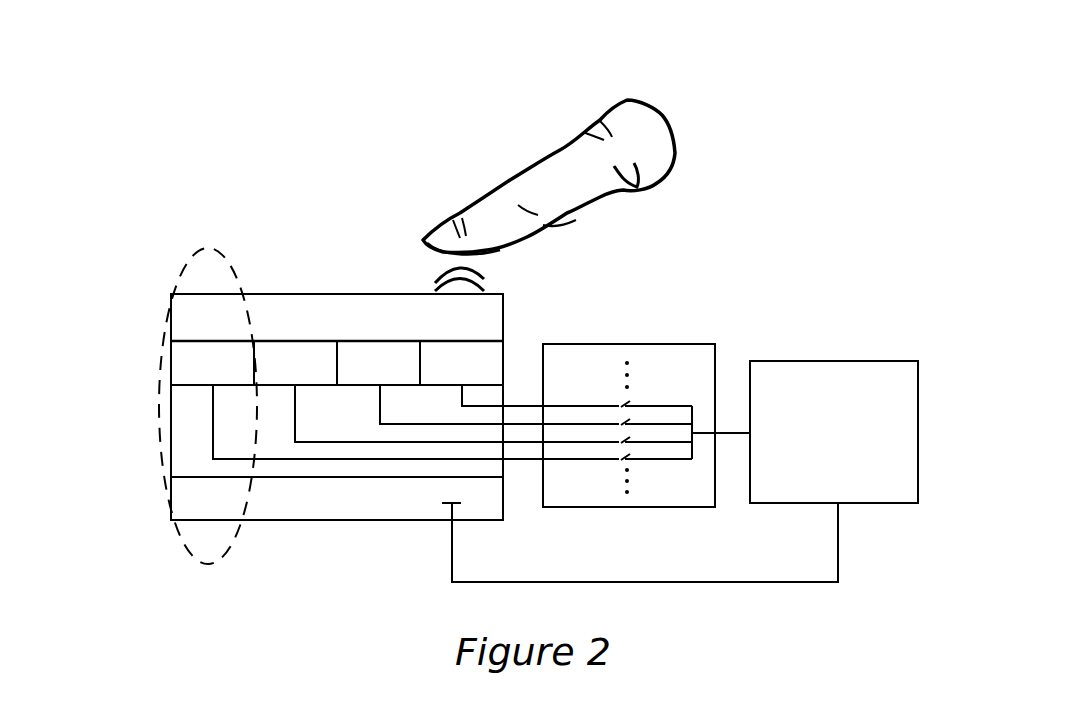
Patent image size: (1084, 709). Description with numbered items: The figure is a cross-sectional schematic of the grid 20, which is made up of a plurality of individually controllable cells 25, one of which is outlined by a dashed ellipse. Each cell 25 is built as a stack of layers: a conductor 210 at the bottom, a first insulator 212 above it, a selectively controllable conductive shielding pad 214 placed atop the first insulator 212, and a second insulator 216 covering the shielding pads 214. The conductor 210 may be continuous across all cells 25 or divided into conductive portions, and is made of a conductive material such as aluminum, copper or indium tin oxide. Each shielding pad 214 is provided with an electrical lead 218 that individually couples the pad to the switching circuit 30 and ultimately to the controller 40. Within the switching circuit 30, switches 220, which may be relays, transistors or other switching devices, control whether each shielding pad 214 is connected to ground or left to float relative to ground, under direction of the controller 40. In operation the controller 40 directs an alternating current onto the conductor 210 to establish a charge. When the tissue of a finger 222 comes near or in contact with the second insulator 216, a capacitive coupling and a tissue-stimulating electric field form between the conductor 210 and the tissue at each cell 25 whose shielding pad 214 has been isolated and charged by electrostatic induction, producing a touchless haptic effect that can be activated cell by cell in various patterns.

The grid 20 is at (294, 290).
The cell 25 is at (220, 243).
The switching circuit 30 is at (640, 336).
The controller 40 is at (680, 471).
The conductor 210 is at (337, 495).
The first insulator 212 is at (337, 431).
The shielding pad 214 is at (337, 363).
The second insulator 216 is at (337, 325).
The electrical lead 218 is at (213, 405).
The switches 220 is at (607, 405).
The finger 222 is at (643, 140).